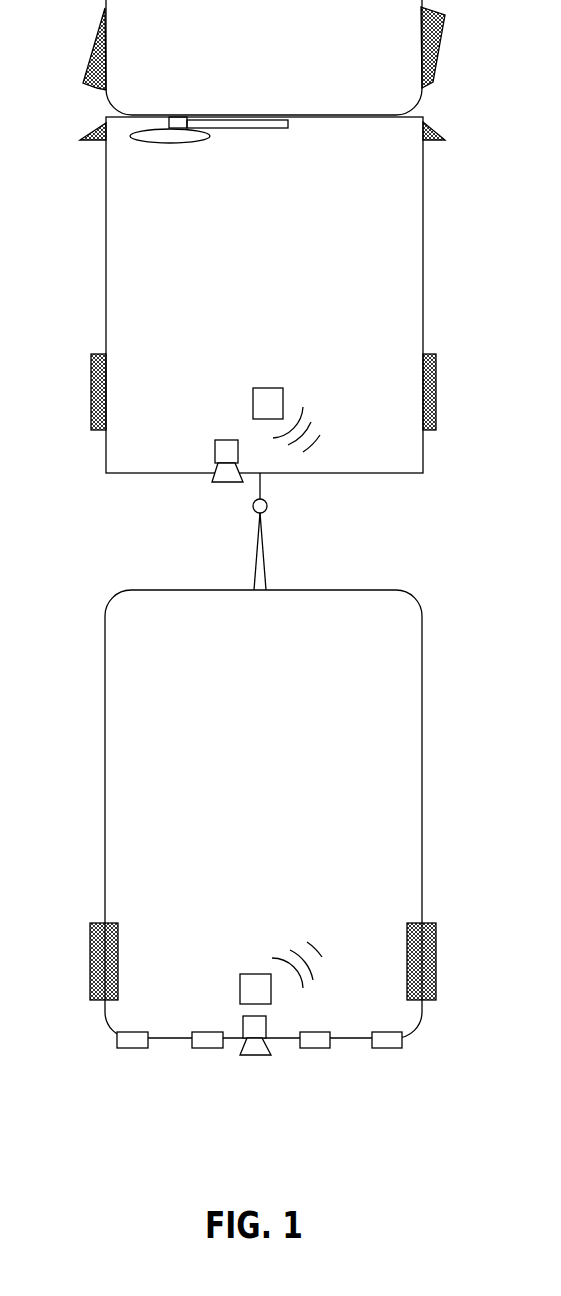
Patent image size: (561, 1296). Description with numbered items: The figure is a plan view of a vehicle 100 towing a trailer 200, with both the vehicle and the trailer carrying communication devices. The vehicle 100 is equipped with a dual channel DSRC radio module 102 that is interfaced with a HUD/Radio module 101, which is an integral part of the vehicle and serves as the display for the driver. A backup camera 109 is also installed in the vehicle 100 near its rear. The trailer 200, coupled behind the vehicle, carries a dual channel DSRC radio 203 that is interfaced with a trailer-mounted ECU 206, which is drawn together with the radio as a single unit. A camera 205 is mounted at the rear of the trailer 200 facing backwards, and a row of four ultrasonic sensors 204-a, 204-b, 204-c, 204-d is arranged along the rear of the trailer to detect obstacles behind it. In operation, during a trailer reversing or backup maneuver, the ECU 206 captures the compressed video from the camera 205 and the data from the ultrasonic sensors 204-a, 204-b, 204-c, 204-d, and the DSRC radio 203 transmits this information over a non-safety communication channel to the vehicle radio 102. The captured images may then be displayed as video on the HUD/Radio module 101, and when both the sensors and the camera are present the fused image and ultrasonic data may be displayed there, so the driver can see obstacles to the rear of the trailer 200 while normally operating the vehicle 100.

The vehicle 100 is at (407, 130).
The HUD/Radio module 101 is at (277, 124).
The dual channel DSRC radio module 102 is at (262, 398).
The backup camera 109 is at (228, 478).
The trailer 200 is at (127, 618).
The dual channel DSRC radio 203 is at (248, 973).
The ECU 206 is at (253, 988).
The camera 205 is at (253, 1060).
The ultrasonic sensor 204-a is at (134, 1044).
The ultrasonic sensor 204-b is at (212, 1044).
The ultrasonic sensor 204-c is at (318, 1044).
The ultrasonic sensor 204-d is at (397, 1044).